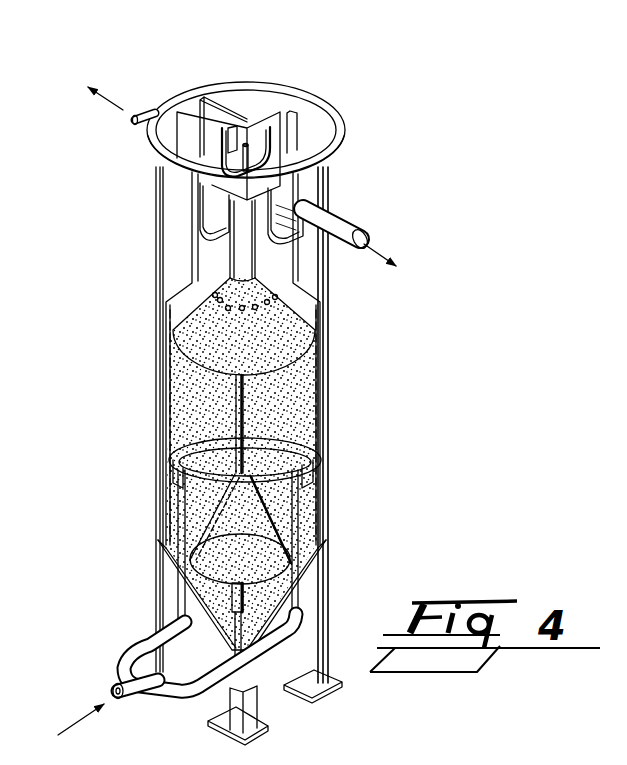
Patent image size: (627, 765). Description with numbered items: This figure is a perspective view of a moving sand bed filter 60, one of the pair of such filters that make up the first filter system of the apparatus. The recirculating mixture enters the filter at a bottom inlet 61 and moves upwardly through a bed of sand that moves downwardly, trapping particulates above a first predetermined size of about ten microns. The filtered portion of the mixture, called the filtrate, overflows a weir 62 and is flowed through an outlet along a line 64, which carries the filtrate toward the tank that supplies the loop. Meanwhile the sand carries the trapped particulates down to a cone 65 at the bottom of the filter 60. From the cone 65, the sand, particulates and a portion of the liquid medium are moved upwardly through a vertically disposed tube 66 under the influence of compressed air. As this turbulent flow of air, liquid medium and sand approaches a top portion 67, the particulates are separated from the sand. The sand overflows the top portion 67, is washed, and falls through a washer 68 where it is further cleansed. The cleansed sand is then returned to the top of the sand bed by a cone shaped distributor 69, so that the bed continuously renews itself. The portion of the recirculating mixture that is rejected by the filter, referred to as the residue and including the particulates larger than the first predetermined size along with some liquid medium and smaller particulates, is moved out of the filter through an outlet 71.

The moving sand bed filter 60 is at (229, 386).
The bottom inlet 61 is at (121, 683).
The weir 62 is at (290, 168).
The line 64 is at (346, 221).
The cone 65 is at (253, 520).
The vertically disposed tube 66 is at (245, 600).
The top portion 67 is at (250, 124).
The washer 68 is at (232, 244).
The cone shaped distributor 69 is at (287, 326).
The outlet 71 is at (142, 112).